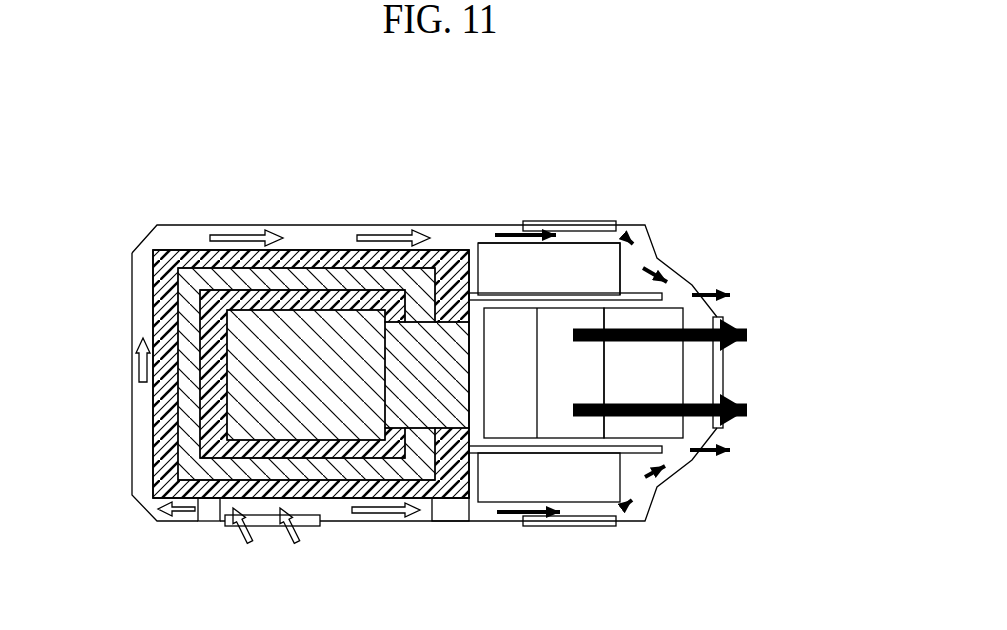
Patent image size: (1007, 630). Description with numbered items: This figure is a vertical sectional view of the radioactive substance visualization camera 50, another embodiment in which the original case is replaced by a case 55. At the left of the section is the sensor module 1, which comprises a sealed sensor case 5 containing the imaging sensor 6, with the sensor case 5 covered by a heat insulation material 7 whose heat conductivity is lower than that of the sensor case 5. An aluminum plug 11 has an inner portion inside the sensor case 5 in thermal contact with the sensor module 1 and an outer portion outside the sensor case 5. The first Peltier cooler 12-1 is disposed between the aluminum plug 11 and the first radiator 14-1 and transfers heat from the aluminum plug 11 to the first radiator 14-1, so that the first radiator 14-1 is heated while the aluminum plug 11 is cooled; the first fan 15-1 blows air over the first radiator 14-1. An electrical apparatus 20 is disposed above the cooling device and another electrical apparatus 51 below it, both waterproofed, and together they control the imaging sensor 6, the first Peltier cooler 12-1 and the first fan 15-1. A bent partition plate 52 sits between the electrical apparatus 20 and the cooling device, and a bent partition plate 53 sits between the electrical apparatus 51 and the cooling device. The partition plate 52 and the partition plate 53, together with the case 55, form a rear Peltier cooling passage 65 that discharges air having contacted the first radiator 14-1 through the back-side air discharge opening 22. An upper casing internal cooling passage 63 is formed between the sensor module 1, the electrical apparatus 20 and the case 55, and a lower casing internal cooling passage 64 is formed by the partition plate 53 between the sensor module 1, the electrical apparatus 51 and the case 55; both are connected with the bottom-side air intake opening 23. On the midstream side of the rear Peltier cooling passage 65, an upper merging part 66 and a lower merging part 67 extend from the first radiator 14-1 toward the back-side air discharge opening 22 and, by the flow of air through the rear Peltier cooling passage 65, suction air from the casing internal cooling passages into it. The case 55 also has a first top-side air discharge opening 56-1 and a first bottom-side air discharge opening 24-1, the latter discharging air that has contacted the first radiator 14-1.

The sensor module 1 is at (347, 247).
The sensor case 5 is at (198, 283).
The imaging sensor 6 is at (298, 322).
The heat insulation material 7 is at (318, 252).
The aluminum plug 11 is at (445, 340).
The first Peltier cooler 12-1 is at (500, 323).
The first radiator 14-1 is at (593, 325).
The first fan 15-1 is at (683, 370).
The electrical apparatus 20 is at (617, 243).
The back-side air discharge opening 22 is at (723, 422).
The bottom-side air intake opening 23 is at (305, 530).
The first bottom-side air discharge opening 24-1 is at (562, 527).
The radioactive substance visualization camera 50 is at (418, 188).
The electrical apparatus 51 is at (490, 492).
The partition plate 52 is at (630, 293).
The partition plate 53 is at (637, 455).
The case 55 is at (131, 384).
The first top-side air discharge opening 56-1 is at (552, 221).
The upper casing internal cooling passage 63 is at (185, 226).
The lower casing internal cooling passage 64 is at (450, 505).
The rear Peltier cooling passage 65 is at (775, 335).
The upper merging part 66 is at (688, 284).
The lower merging part 67 is at (680, 455).